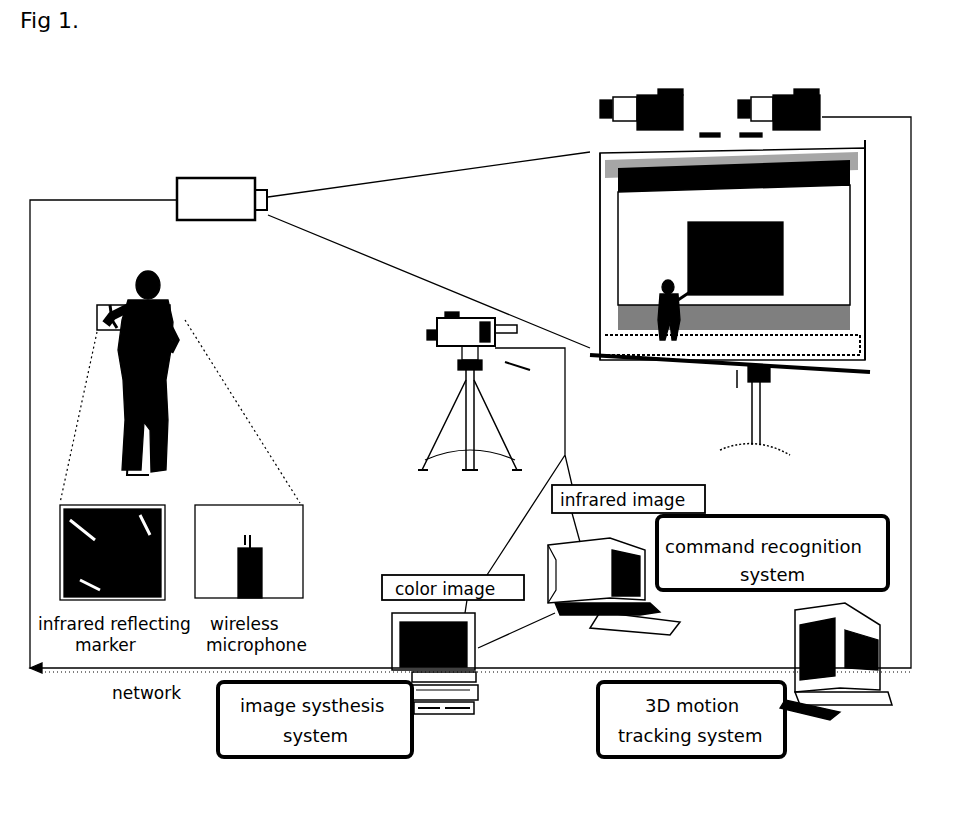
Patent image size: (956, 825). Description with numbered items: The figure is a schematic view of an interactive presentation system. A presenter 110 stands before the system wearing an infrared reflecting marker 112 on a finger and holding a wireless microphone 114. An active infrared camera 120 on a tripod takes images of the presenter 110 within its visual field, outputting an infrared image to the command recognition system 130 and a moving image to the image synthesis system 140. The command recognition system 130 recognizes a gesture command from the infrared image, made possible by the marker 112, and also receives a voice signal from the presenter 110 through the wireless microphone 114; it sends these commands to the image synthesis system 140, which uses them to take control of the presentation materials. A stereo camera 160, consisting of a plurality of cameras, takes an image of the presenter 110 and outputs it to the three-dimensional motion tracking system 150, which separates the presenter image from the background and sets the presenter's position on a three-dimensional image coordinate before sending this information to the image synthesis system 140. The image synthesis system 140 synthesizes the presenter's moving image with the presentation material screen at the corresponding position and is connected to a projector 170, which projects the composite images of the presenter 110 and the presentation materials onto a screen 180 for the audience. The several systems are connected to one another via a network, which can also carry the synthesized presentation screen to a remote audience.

The presenter 110 is at (152, 273).
The infrared reflecting marker 112 is at (97, 312).
The wireless microphone 114 is at (170, 310).
The active infrared camera 120 is at (482, 318).
The command recognition system 130 is at (582, 616).
The image synthesis system 140 is at (473, 677).
The three-dimensional motion tracking system 150 is at (850, 694).
The stereo camera 160 is at (812, 95).
The projector 170 is at (205, 177).
The screen 180 is at (820, 375).